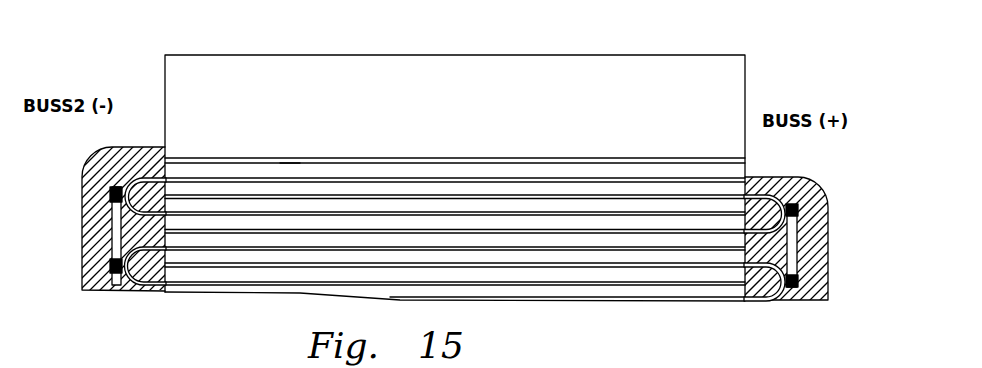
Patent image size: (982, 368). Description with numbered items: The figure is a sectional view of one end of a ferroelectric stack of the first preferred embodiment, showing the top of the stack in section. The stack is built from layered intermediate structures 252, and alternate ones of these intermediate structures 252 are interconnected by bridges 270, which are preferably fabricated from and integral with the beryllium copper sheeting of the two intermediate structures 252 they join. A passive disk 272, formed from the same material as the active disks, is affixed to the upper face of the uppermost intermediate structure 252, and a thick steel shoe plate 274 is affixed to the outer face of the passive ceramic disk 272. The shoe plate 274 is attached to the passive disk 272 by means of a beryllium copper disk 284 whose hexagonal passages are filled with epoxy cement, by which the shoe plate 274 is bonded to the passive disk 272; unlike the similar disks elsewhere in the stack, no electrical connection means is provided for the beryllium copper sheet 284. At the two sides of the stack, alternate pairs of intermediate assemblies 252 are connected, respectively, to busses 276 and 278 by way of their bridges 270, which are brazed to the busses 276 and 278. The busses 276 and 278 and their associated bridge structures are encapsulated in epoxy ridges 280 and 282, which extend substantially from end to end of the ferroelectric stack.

The intermediate structures 252 is at (592, 232).
The bridges 270 is at (127, 190).
The passive disk 272 is at (740, 165).
The shoe plate 274 is at (723, 57).
The buss 276 is at (110, 251).
The buss 278 is at (788, 291).
The epoxy ridge 280 is at (90, 193).
The epoxy ridge 282 is at (813, 203).
The beryllium copper disk 284 is at (292, 160).